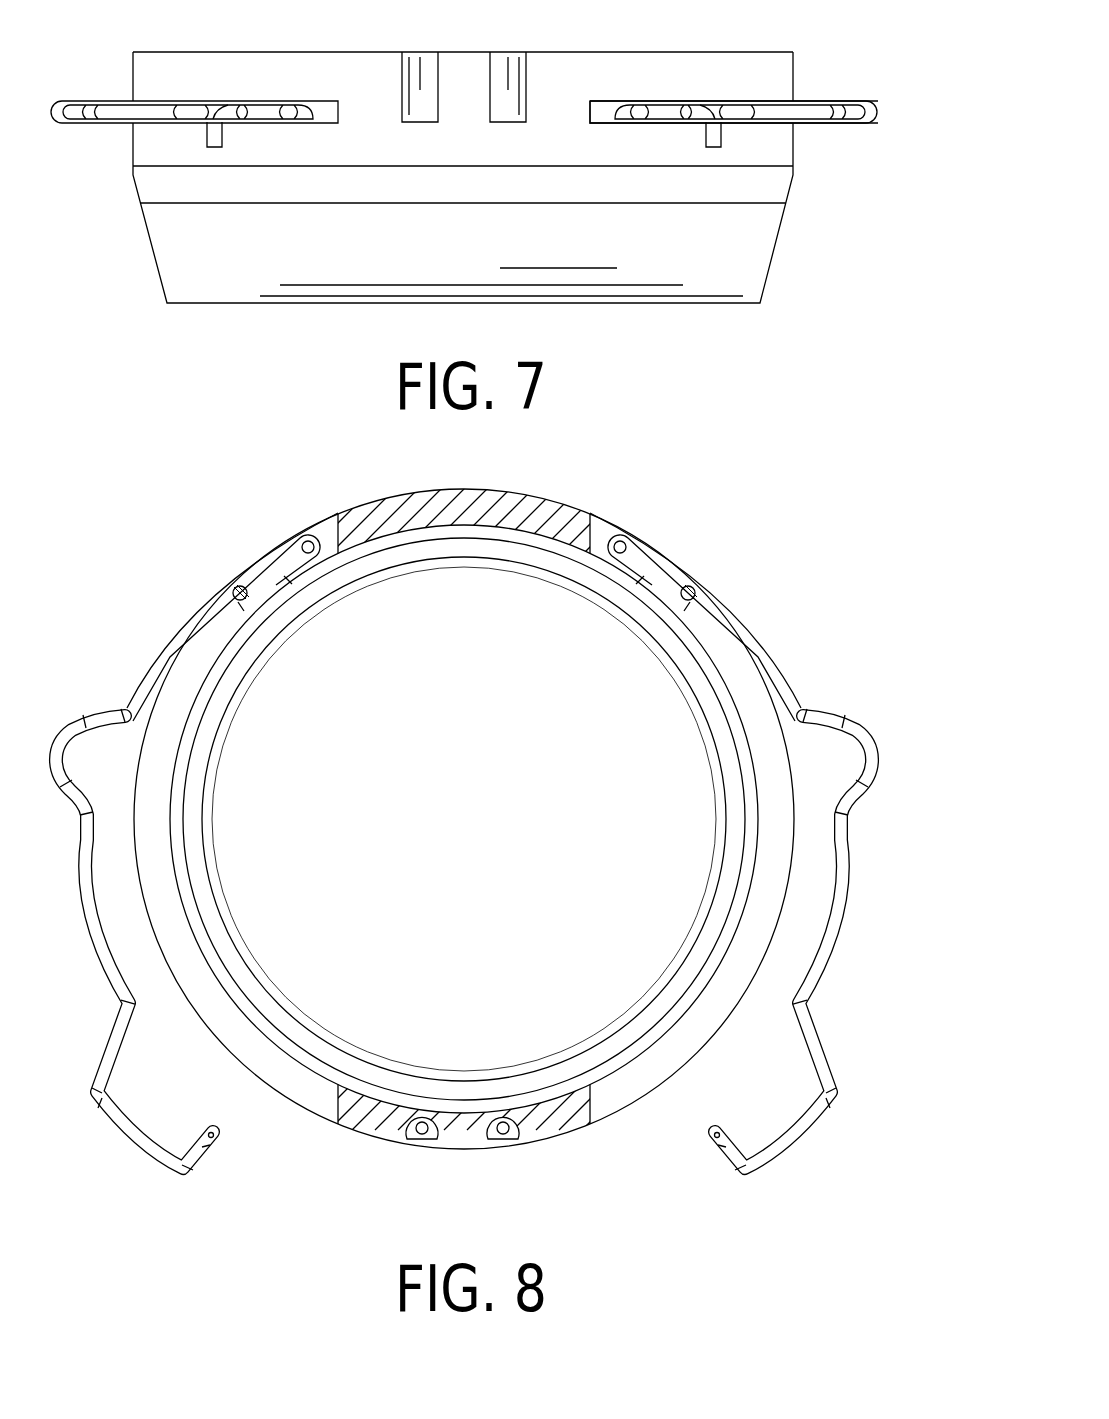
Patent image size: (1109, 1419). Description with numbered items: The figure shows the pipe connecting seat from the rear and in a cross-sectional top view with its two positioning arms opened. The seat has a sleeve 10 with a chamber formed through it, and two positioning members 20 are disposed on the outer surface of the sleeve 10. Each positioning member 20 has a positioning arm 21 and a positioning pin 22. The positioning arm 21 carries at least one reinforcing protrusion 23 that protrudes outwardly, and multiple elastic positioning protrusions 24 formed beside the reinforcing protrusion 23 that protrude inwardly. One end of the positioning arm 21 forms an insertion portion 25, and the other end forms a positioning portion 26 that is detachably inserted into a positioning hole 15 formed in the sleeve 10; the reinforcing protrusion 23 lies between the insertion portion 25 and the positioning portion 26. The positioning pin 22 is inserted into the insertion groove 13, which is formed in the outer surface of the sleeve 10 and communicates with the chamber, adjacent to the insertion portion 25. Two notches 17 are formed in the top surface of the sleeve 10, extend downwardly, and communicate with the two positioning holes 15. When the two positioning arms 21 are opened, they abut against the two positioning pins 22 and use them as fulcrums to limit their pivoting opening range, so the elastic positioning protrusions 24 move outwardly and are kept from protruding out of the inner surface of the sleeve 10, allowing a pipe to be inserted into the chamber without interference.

In FIG. 7, the sleeve 10 is at (735, 247).
In FIG. 8, the sleeve 10 is at (527, 512).
In FIG. 7, the insertion groove 13 is at (603, 120).
In FIG. 8, the insertion groove 13 is at (618, 1090).
In FIG. 8, the positioning hole 15 is at (418, 1132).
In FIG. 7, the notch 17 is at (527, 78).
In FIG. 8, the notch 17 is at (430, 1140).
In FIG. 8, the positioning member 20 is at (243, 552).
In FIG. 7, the positioning arm 21 is at (855, 100).
In FIG. 8, the positioning arm 21 is at (803, 680).
In FIG. 8, the positioning pin 22 is at (693, 590).
In FIG. 8, the reinforcing protrusion 23 is at (867, 740).
In FIG. 8, the elastic positioning protrusion 24 is at (745, 648).
In FIG. 8, the insertion portion 25 is at (626, 540).
In FIG. 7, the positioning portion 26 is at (708, 140).
In FIG. 8, the positioning portion 26 is at (717, 1120).